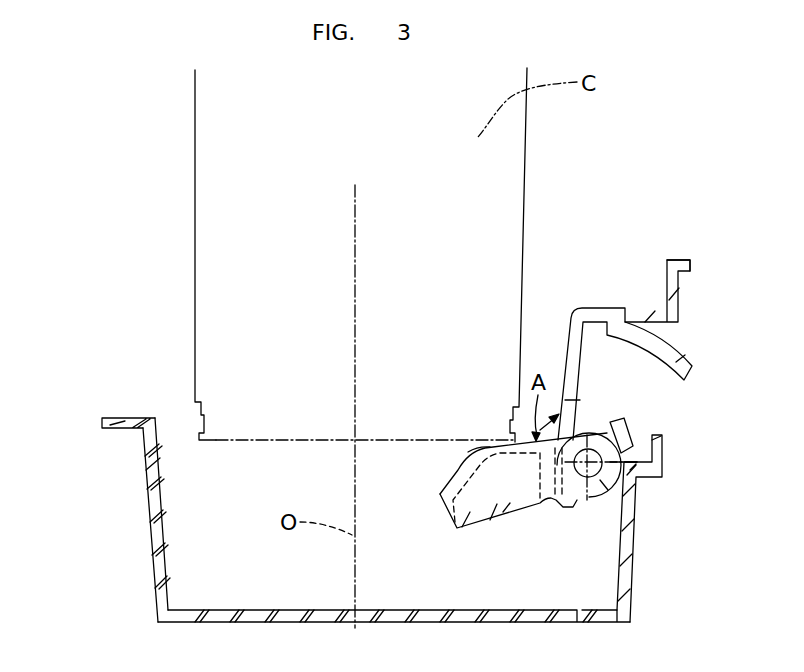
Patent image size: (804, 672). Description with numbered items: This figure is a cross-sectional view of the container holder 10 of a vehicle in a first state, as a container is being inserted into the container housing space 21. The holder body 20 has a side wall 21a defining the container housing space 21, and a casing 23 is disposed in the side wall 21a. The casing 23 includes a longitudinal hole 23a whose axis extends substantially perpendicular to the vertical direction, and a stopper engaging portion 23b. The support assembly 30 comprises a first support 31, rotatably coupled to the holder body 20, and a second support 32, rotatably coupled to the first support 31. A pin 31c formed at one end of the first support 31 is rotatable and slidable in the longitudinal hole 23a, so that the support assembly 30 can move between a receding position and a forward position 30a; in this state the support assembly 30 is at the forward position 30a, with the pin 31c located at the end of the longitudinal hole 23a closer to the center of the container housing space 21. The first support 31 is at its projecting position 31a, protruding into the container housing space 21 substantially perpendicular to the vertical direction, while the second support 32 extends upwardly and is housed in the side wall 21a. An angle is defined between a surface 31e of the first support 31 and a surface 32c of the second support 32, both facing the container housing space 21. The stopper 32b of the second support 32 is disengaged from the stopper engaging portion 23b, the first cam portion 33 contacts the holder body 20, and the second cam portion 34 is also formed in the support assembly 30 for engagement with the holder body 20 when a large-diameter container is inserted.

The container holder 10 is at (631, 261).
The holder body 20 is at (102, 427).
The container housing space 21 is at (195, 506).
The side wall 21a is at (153, 552).
The casing 23 is at (625, 597).
The longitudinal hole 23a is at (616, 428).
The stopper engaging portion 23b is at (668, 468).
The support assembly 30 is at (462, 530).
The forward position 30a is at (502, 530).
The first support 31 is at (478, 530).
The projecting position 31a is at (495, 530).
The pin 31c is at (590, 470).
The surface of the first support 31e is at (481, 443).
The second support 32 is at (688, 355).
The stopper 32b is at (626, 463).
The surface of the second support 32c is at (565, 357).
The first cam portion 33 is at (631, 502).
The second cam portion 34 is at (573, 507).